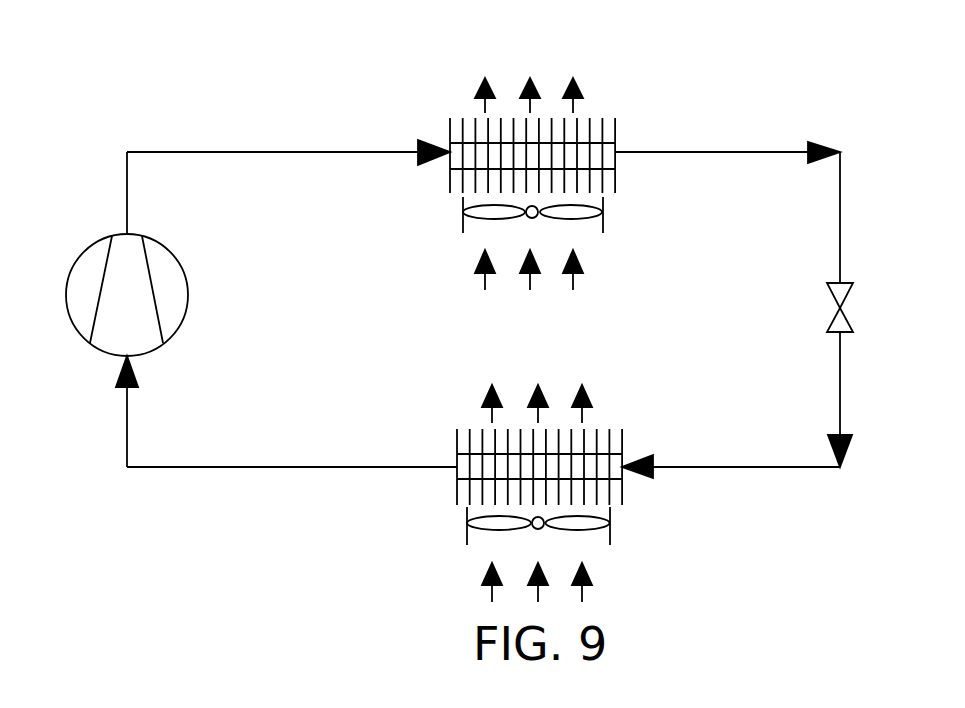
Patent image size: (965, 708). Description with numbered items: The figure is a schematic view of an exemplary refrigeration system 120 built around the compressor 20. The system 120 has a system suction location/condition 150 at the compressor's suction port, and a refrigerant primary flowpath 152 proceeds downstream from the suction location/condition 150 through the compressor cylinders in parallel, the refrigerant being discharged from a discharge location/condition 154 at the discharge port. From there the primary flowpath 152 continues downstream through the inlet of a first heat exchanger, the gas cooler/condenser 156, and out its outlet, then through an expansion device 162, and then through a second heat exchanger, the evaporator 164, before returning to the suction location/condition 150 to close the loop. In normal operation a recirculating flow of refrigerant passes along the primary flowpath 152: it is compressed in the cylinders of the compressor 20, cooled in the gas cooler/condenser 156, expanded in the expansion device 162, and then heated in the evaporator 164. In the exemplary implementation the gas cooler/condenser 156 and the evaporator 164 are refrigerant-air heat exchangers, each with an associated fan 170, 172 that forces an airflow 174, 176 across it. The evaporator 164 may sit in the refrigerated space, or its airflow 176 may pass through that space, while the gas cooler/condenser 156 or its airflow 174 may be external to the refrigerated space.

The compressor 20 is at (138, 312).
The refrigeration system 120 is at (730, 106).
The system suction location/condition 150 is at (131, 358).
The refrigerant primary flowpath 152 is at (292, 467).
The discharge location/condition 154 is at (130, 236).
The first heat exchanger (gas cooler/condenser) 156 is at (630, 179).
The expansion device 162 is at (860, 305).
The second heat exchanger (evaporator) 164 is at (640, 503).
The fan 170 is at (590, 228).
The fan 172 is at (589, 539).
The airflow 174 is at (578, 96).
The airflow 176 is at (582, 413).